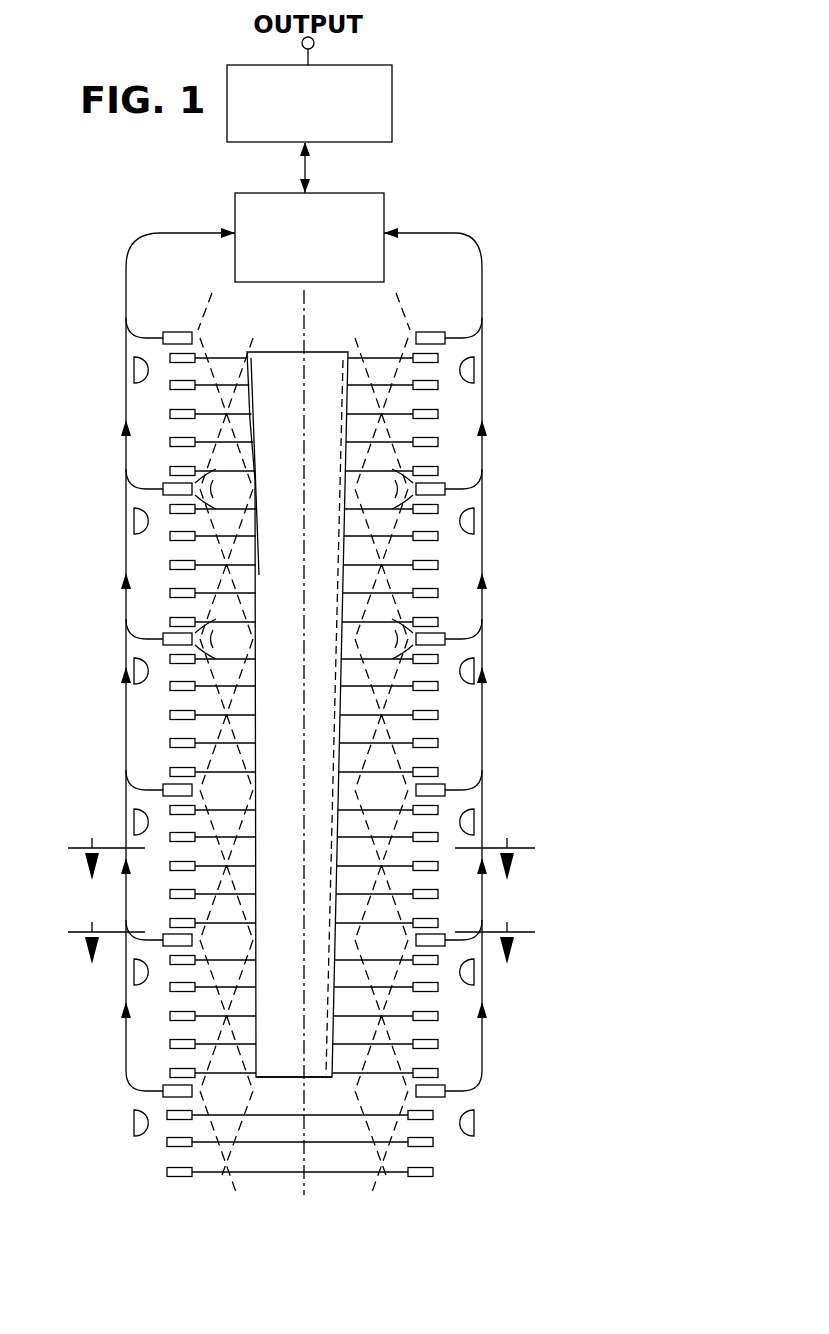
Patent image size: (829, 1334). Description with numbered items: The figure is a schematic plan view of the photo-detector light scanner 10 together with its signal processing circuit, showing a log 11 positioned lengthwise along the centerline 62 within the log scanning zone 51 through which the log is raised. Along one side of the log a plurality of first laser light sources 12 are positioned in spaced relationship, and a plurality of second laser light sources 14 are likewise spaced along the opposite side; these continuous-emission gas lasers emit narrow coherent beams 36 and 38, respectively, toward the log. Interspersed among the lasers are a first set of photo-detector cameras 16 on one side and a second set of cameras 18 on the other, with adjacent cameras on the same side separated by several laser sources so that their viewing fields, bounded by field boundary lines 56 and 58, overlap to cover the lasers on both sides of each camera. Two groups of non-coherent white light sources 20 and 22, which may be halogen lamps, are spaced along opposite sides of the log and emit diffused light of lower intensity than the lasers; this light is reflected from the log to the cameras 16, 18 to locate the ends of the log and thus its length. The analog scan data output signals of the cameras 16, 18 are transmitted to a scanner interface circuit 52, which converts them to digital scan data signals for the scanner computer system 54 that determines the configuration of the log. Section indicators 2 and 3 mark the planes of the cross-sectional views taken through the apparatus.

The photo-detector light scanner 10 is at (92, 330).
The log 11 is at (280, 1077).
The first laser light sources 12 is at (170, 414).
The second laser light sources 14 is at (438, 414).
The first set of photo-detector cameras 16 is at (170, 483).
The second set of photo-detector cameras 18 is at (435, 332).
The first group of non-coherent light sources 20 is at (134, 363).
The second group of non-coherent light sources 22 is at (474, 370).
The narrow beams of first laser light sources 36 is at (223, 564).
The narrow beams of second laser light sources 38 is at (383, 564).
The log scanning zone 51 is at (329, 340).
The scanner interface circuit 52 is at (384, 212).
The scanner computer system 54 is at (392, 105).
The field boundary line 56 is at (258, 403).
The field boundary line 58 is at (233, 582).
The centerline 62 is at (305, 506).
The section line 2 is at (301, 932).
The section line 3 is at (301, 848).